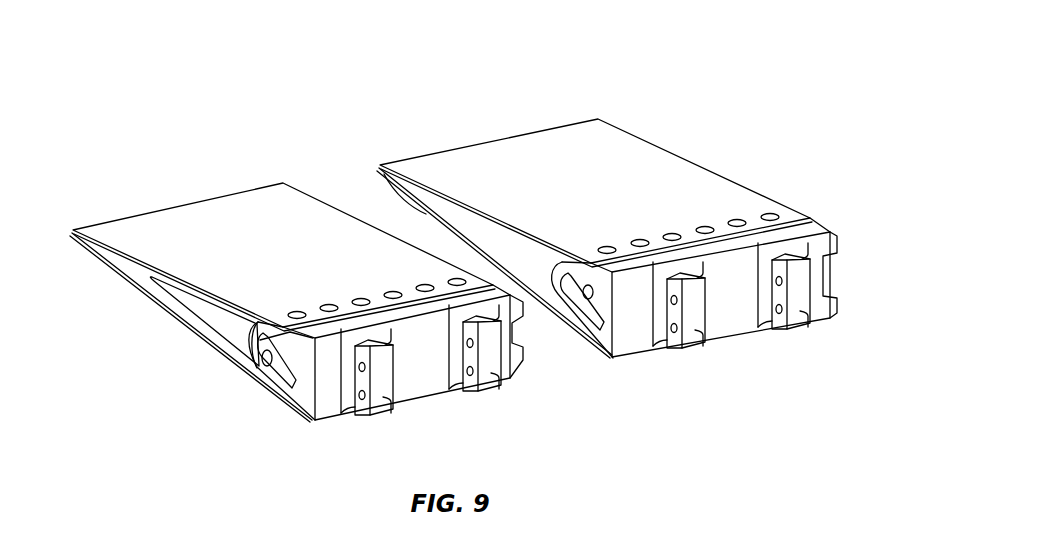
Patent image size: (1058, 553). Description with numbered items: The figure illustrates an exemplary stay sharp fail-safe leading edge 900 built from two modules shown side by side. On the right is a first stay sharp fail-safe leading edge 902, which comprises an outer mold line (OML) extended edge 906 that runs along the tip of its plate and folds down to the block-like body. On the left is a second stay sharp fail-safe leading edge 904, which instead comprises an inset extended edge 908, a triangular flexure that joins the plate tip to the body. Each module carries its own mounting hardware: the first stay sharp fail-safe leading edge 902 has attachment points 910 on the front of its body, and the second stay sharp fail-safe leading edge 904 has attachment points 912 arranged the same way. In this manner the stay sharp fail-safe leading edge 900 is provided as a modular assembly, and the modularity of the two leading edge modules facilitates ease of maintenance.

The stay sharp fail-safe leading edge 900 is at (676, 42).
The first stay sharp fail-safe leading edge 902 is at (660, 162).
The second stay sharp fail-safe leading edge 904 is at (240, 212).
The outer mold line (OML) extended edge 906 is at (397, 193).
The inset extended edge 908 is at (133, 273).
The attachment points 910 is at (690, 352).
The attachment points 912 is at (383, 405).